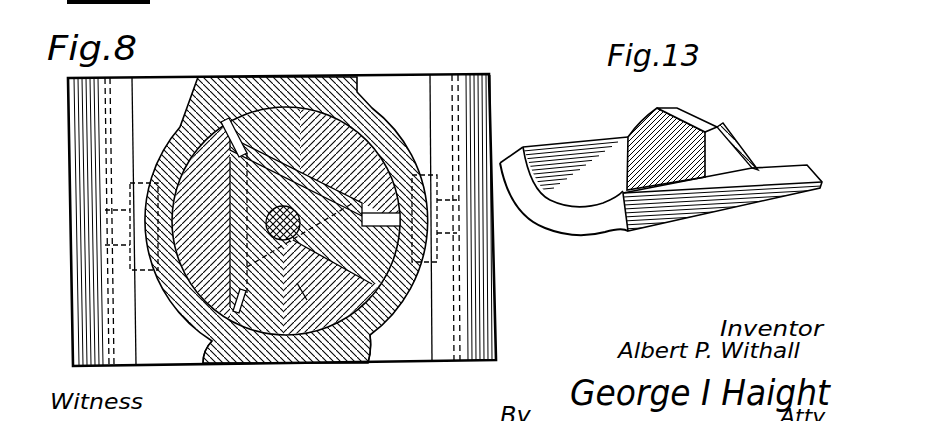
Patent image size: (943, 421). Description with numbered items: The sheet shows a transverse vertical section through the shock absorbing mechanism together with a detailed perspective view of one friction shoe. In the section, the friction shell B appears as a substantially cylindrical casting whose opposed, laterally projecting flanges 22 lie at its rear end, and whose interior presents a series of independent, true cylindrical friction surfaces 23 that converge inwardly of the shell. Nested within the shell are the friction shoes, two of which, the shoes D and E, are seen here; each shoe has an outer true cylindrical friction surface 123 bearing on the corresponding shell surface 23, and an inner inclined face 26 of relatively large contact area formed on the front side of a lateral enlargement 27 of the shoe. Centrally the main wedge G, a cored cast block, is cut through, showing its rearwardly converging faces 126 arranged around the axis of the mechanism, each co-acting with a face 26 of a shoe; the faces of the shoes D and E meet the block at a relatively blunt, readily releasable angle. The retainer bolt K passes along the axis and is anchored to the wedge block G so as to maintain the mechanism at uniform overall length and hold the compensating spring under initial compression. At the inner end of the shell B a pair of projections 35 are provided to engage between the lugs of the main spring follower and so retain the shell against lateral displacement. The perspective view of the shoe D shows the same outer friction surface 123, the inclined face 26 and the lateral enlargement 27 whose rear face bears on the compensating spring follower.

In FIG. 8, the flanges 22 is at (403, 5).
In FIG. 8, the friction surfaces 23 is at (293, 158).
In FIG. 8, the inclined face 26 is at (205, 300).
In FIG. 13, the inclined face 26 is at (643, 138).
In FIG. 13, the lateral enlargement 27 is at (733, 153).
In FIG. 8, the projections 35 is at (135, 181).
In FIG. 8, the friction surface 123 is at (235, 27).
In FIG. 13, the friction surface 123 is at (637, 228).
In FIG. 8, the converging faces 126 is at (324, 146).
In FIG. 8, the friction shell B is at (276, 22).
In FIG. 13, the friction shoe D is at (587, 146).
In FIG. 8, the friction shoe E is at (332, 0).
In FIG. 8, the main wedge G is at (283, 240).
In FIG. 8, the retainer bolt K is at (297, 283).